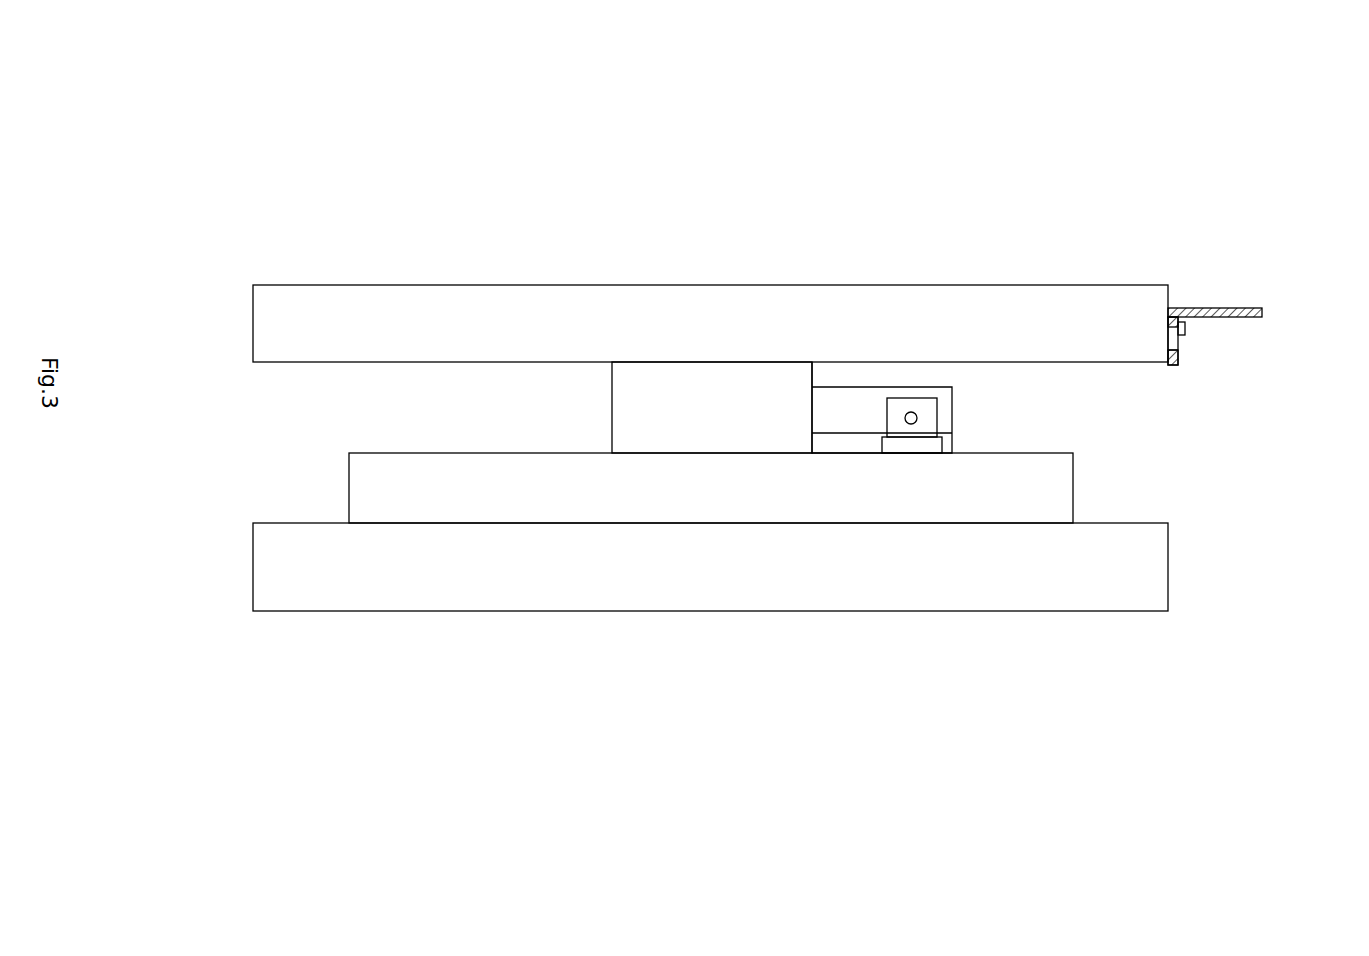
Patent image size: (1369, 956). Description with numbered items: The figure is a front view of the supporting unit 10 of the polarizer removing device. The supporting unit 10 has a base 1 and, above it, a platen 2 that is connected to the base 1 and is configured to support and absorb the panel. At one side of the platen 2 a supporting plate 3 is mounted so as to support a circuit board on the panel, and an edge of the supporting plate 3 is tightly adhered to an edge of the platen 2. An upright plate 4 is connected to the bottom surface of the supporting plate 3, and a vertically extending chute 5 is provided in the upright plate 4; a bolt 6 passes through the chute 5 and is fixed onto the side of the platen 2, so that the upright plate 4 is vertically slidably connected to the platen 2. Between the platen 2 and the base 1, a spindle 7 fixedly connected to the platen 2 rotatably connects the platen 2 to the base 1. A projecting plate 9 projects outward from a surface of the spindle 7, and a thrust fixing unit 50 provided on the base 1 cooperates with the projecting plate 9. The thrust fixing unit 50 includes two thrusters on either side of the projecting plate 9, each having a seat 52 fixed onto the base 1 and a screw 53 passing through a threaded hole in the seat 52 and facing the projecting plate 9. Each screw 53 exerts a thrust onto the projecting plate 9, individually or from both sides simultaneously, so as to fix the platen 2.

The supporting unit 10 is at (222, 192).
The base 1 is at (428, 502).
The platen 2 is at (473, 310).
The supporting plate 3 is at (1238, 308).
The upright plate 4 is at (1180, 360).
The chute 5 is at (1180, 350).
The bolt 6 is at (1185, 328).
The spindle 7 is at (672, 400).
The projecting plate 9 is at (850, 410).
The thrust fixing unit 50 is at (973, 373).
The seat 52 is at (937, 437).
The screw 53 is at (917, 418).